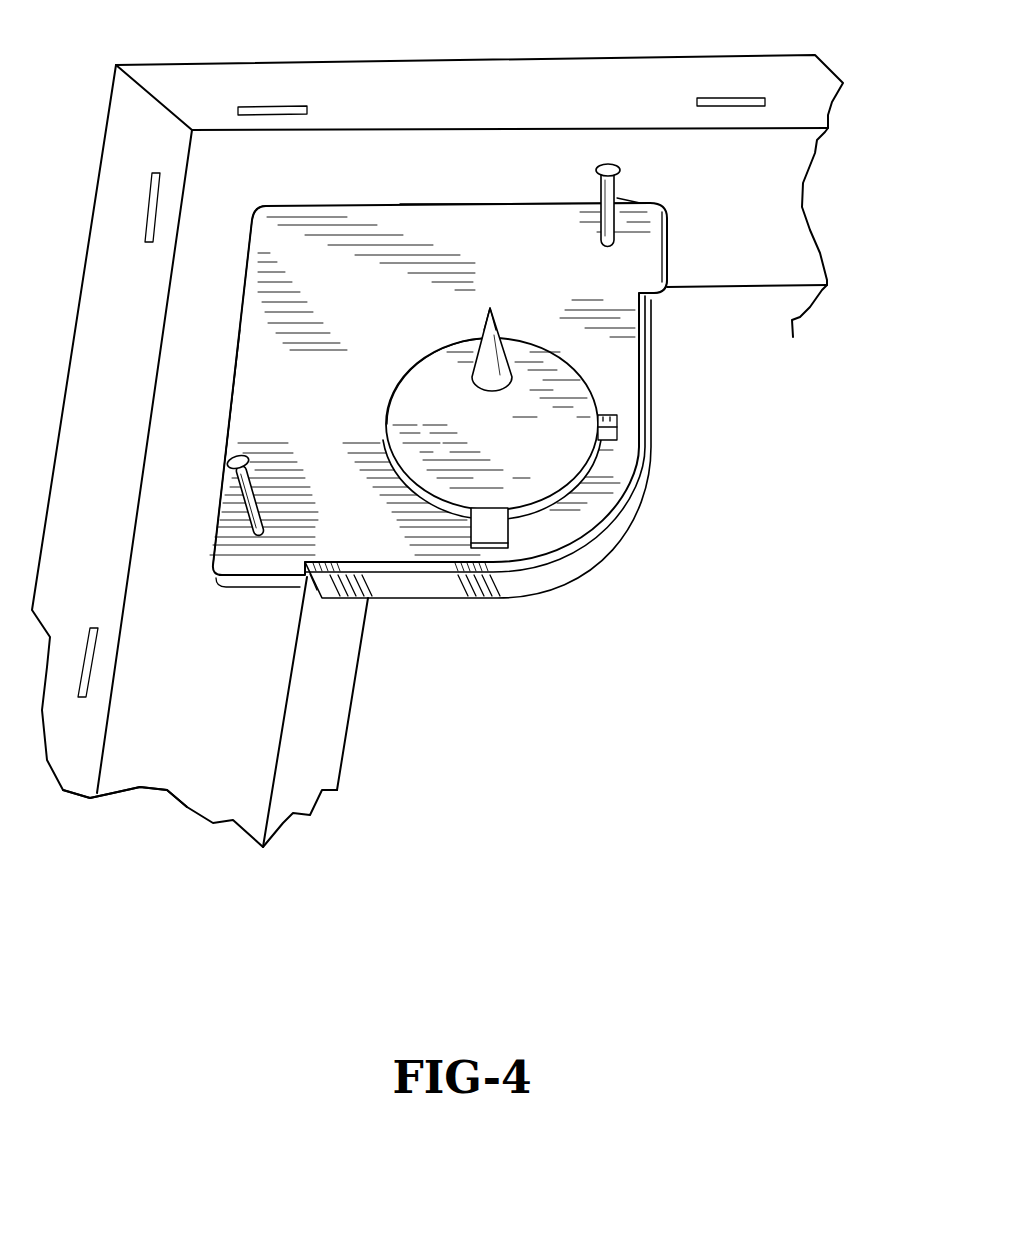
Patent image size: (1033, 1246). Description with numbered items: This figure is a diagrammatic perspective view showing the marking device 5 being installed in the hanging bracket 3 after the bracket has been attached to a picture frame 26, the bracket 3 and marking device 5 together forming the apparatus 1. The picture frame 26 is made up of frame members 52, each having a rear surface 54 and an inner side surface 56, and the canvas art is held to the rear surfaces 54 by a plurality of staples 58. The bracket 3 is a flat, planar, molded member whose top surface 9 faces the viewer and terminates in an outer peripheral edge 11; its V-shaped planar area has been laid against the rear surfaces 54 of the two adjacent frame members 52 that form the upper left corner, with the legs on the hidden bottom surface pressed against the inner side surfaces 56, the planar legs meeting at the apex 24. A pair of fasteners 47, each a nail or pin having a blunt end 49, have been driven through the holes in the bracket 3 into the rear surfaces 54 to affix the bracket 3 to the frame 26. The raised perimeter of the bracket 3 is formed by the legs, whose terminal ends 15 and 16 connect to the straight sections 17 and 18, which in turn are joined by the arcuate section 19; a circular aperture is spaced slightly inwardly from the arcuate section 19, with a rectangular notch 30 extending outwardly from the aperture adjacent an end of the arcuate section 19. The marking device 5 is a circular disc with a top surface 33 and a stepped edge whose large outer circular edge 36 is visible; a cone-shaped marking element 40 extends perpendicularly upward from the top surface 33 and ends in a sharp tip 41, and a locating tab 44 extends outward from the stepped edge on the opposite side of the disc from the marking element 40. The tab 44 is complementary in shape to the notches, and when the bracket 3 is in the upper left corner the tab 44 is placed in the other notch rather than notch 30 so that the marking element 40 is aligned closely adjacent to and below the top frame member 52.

The apparatus 1 is at (704, 690).
The bracket 3 is at (372, 190).
The marking device 5 is at (441, 375).
The top surface 9 is at (513, 215).
The outer peripheral edge 11 is at (223, 413).
The terminal end 15 is at (312, 593).
The terminal end 16 is at (650, 309).
The straight section 17 is at (392, 588).
The straight section 18 is at (648, 398).
The arcuate section 19 is at (607, 540).
The apex 24 is at (255, 206).
The picture frame 26 is at (225, 49).
The notch 30 is at (609, 433).
The top surface 33 is at (413, 410).
The outer circular edge 36 is at (562, 496).
The marking element 40 is at (511, 350).
The tip 41 is at (491, 308).
The locating tab 44 is at (500, 528).
The fastener 47 is at (620, 194).
The blunt end 49 is at (614, 166).
The frame member 52 is at (228, 805).
The rear surface 54 is at (165, 786).
The inner side surface 56 is at (333, 698).
The staple 58 is at (298, 107).